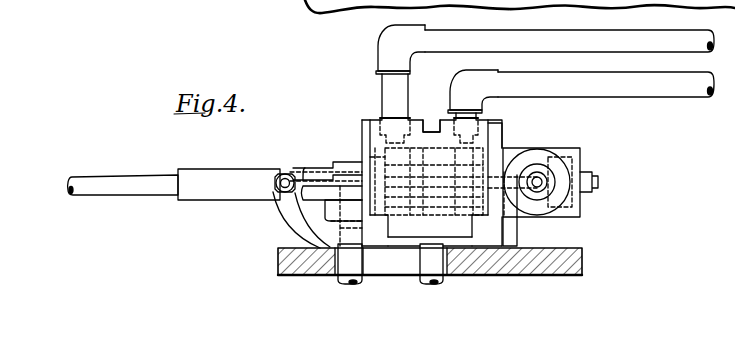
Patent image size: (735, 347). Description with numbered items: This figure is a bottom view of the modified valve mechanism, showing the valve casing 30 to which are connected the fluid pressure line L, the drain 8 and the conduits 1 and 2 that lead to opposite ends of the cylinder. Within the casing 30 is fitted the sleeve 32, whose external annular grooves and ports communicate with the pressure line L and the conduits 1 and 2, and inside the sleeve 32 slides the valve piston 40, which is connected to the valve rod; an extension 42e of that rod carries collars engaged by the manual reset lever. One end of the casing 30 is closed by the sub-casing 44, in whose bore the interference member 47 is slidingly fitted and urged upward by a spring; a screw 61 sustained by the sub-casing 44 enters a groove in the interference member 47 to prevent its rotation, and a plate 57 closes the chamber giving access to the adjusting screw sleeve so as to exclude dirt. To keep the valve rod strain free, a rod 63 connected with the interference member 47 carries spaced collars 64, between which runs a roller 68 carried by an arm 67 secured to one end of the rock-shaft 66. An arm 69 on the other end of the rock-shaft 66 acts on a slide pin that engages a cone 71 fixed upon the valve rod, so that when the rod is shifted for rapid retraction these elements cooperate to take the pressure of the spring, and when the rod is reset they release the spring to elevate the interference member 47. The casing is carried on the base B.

The conduit 1 is at (545, 72).
The conduit 2 is at (581, 94).
The valve casing 30 is at (431, 131).
The interference member 47 is at (362, 124).
The sub-casing 44 is at (503, 123).
The valve piston 40 is at (362, 158).
The sleeve 32 is at (380, 150).
The rock-shaft 66 is at (430, 237).
The extension of the rod 42e is at (174, 184).
The cone 71 is at (302, 161).
The arm 69 is at (298, 225).
The plate 57 is at (579, 152).
The spaced collars 64 is at (541, 166).
The roller 68 is at (524, 175).
The rod 63 is at (542, 186).
The screw 61 is at (598, 178).
The arm 67 is at (516, 223).
The base B is at (588, 245).
The drain 8 is at (350, 264).
The fluid pressure line L is at (420, 263).